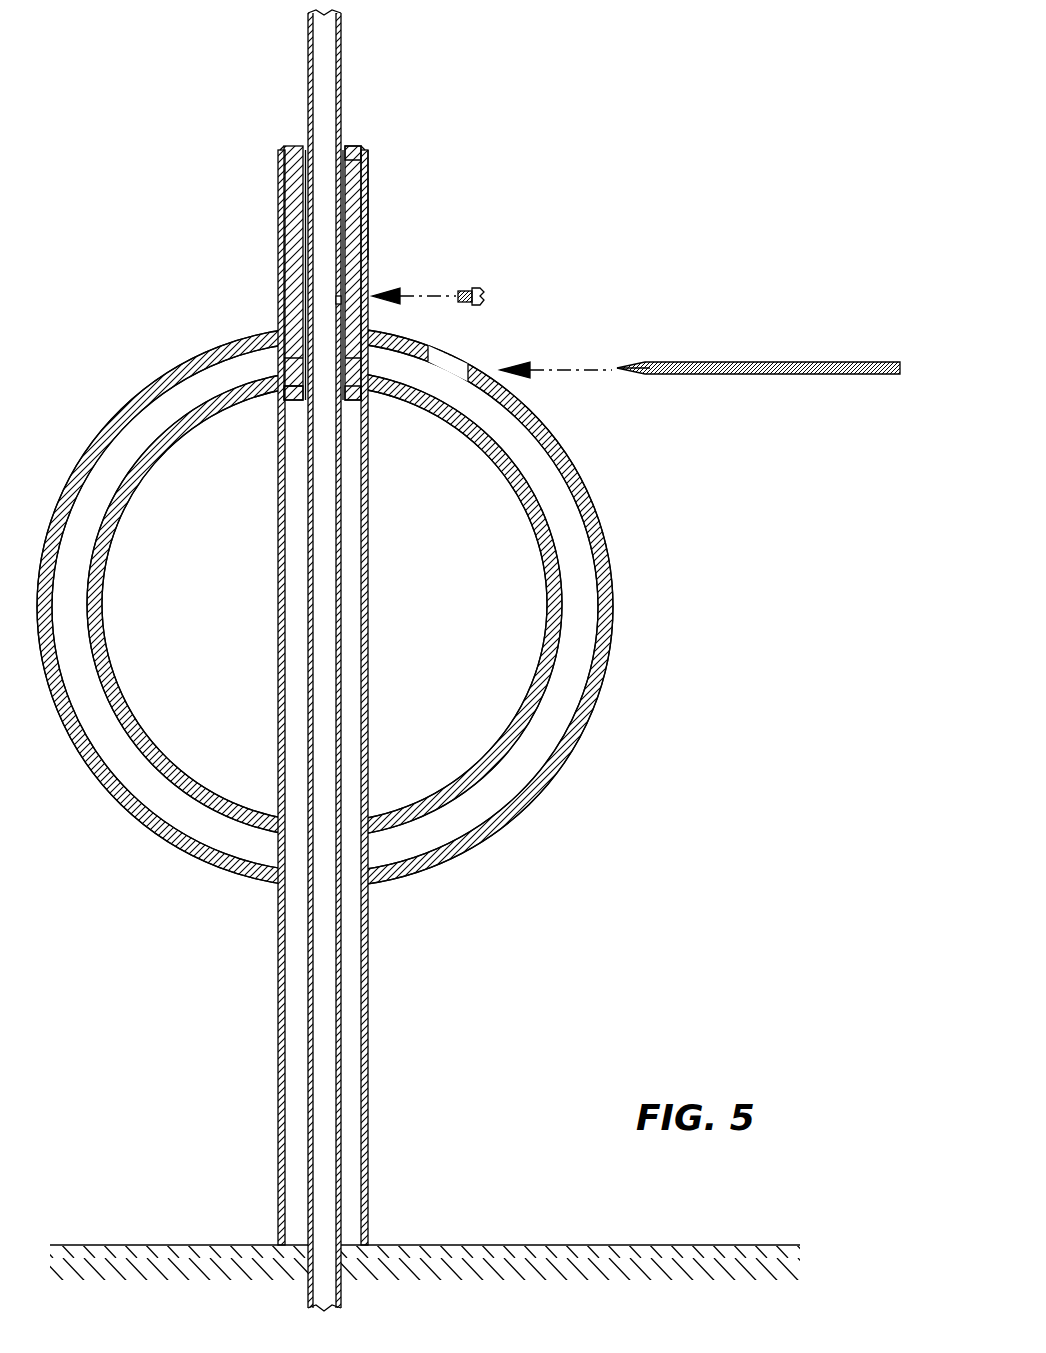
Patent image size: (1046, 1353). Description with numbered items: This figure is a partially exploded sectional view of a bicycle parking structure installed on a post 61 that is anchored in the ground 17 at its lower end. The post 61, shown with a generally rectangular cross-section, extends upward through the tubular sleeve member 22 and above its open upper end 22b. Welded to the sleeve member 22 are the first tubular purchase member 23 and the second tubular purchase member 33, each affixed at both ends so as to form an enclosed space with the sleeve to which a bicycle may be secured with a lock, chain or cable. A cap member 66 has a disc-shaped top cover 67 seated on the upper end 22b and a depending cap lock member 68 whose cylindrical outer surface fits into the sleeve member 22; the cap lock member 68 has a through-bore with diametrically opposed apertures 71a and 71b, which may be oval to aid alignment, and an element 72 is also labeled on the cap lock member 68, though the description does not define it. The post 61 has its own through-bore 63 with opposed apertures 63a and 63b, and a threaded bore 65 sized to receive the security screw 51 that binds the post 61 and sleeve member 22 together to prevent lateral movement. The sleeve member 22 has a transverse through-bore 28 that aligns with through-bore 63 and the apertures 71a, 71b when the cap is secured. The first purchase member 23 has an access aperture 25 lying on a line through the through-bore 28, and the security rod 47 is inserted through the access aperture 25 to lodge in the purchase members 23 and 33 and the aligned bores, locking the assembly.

The ground 17 is at (455, 1250).
The tubular sleeve member 22 is at (368, 170).
The open upper end 22b is at (284, 172).
The first tubular purchase member 23 is at (617, 580).
The access aperture 25 is at (478, 372).
The sleeve through-bore 28 is at (368, 382).
The second tubular purchase member 33 is at (170, 365).
The security rod 47 is at (760, 362).
The security screw 51 is at (478, 290).
The post 61 is at (341, 82).
The through-bore 63 is at (440, 358).
The aperture 63a is at (333, 375).
The aperture 63b is at (300, 360).
The threaded bore 65 is at (340, 300).
The cap member 66 is at (370, 200).
The top cover 67 is at (345, 145).
The cap lock member 68 is at (362, 225).
The aperture 71a is at (364, 365).
The aperture 71b is at (288, 362).
The liner 72 is at (360, 265).